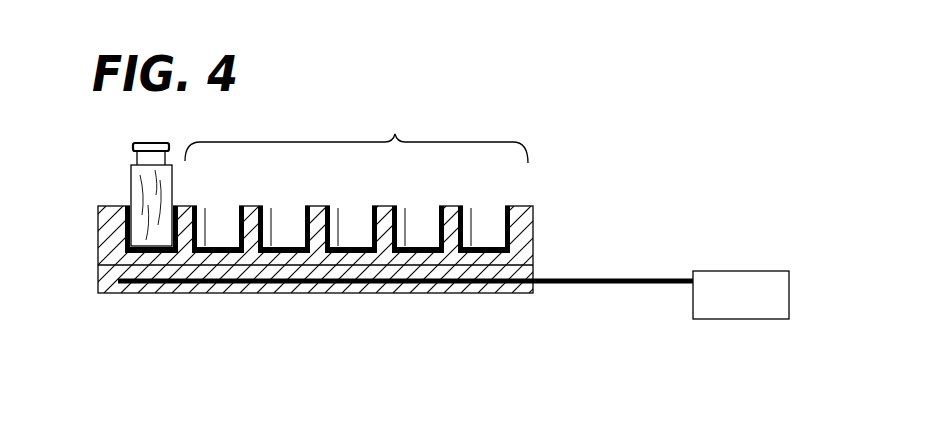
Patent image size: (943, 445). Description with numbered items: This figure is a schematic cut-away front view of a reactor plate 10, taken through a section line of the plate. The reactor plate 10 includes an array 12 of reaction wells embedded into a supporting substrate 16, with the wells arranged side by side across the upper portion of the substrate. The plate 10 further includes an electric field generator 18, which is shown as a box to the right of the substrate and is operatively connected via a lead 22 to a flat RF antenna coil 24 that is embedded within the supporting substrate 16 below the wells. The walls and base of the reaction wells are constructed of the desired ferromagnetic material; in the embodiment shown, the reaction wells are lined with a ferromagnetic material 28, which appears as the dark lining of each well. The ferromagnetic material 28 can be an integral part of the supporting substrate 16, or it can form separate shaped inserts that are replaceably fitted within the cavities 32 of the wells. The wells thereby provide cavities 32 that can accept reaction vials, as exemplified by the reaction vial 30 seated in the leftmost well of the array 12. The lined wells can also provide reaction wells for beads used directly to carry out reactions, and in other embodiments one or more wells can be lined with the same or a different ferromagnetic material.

The reactor plate 10 is at (673, 203).
The array 12 is at (326, 181).
The supporting substrate 16 is at (533, 236).
The electric field generator 18 is at (755, 271).
The lead 22 is at (640, 285).
The flat RF antenna coil 24 is at (312, 284).
The ferromagnetic material 28 is at (205, 231).
The reaction vial 30 is at (130, 185).
The cavity 32 is at (223, 227).